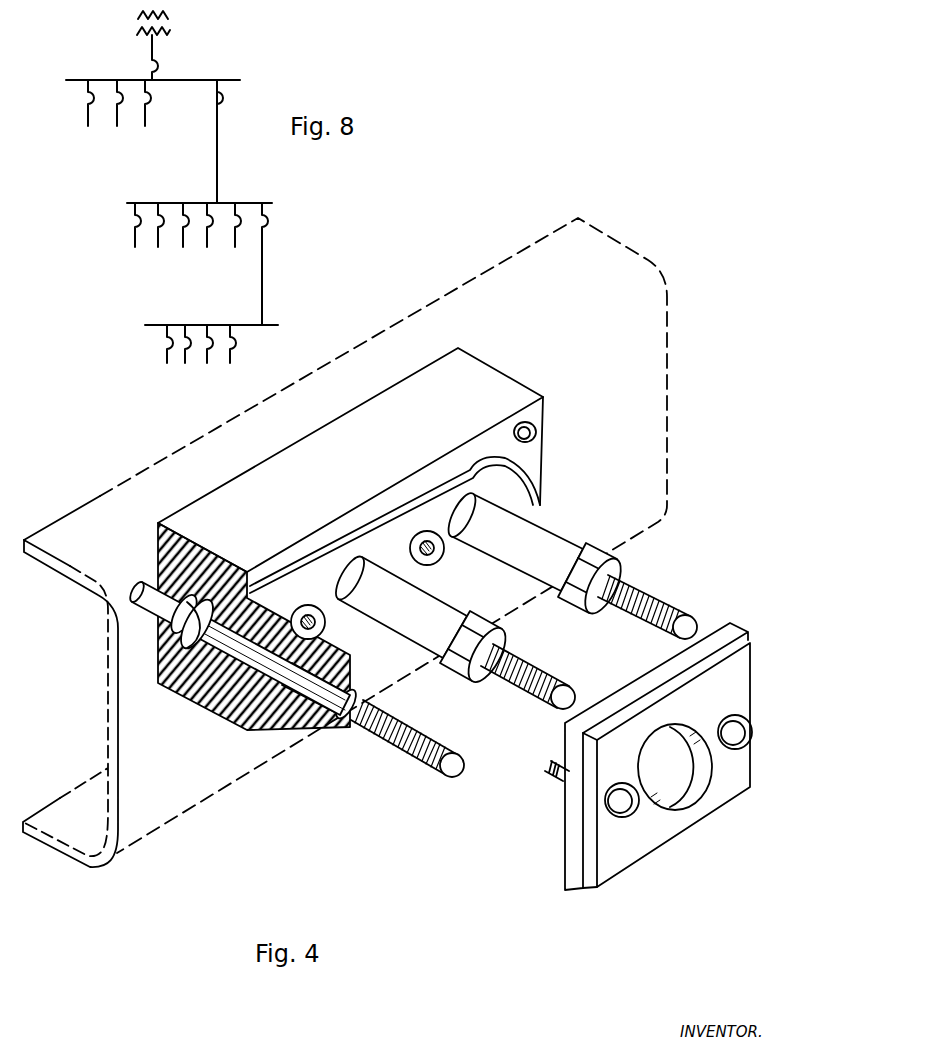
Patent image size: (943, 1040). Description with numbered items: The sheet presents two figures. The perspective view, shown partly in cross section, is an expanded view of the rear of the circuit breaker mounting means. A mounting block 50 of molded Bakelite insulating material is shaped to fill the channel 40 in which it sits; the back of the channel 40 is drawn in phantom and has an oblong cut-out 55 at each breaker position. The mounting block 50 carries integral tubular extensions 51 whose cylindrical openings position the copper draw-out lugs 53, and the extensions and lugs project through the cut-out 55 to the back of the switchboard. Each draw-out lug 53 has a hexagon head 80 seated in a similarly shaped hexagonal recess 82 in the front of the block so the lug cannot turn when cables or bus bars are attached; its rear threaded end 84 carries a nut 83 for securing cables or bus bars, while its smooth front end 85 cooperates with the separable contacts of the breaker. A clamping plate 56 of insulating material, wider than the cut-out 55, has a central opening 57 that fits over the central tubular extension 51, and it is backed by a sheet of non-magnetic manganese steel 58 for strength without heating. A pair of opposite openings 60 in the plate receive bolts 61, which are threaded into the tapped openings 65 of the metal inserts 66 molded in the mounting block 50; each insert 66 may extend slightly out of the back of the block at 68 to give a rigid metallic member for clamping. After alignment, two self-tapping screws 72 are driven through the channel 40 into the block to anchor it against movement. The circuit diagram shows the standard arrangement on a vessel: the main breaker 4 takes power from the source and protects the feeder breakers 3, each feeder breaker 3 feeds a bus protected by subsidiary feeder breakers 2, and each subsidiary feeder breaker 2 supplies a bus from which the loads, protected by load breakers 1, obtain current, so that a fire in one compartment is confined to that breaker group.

In FIG. 8, the load circuit breakers 1 is at (165, 345).
In FIG. 8, the subsidiary feeder circuit breakers 2 is at (131, 228).
In FIG. 8, the feeder circuit breakers 3 is at (214, 106).
In FIG. 8, the main circuit breaker 4 is at (147, 62).
In FIG. 4, the channel 40 is at (676, 308).
In FIG. 4, the mounting block 50 is at (368, 539).
In FIG. 4, the tubular extensions 51 is at (571, 534).
In FIG. 4, the draw-out lugs 53 is at (664, 599).
In FIG. 4, the oblong cut-out 55 is at (385, 640).
In FIG. 4, the clamping plate 56 is at (560, 832).
In FIG. 4, the central opening 57 is at (690, 778).
In FIG. 4, the manganese steel sheet 58 is at (657, 783).
In FIG. 4, the openings 60 is at (748, 720).
In FIG. 4, the bolts 61 is at (752, 732).
In FIG. 4, the tapped openings 65 is at (433, 546).
In FIG. 4, the metal inserts 66 is at (333, 598).
In FIG. 4, the projecting end of insert 68 is at (411, 549).
In FIG. 4, the self-tapping screws 72 is at (534, 431).
In FIG. 4, the hexagon head 80 is at (173, 628).
In FIG. 4, the hexagonal recesses 82 is at (172, 636).
In FIG. 4, the nuts 83 is at (607, 569).
In FIG. 4, the threaded ends 84 is at (631, 587).
In FIG. 4, the ends of draw-out lugs 85 is at (144, 591).